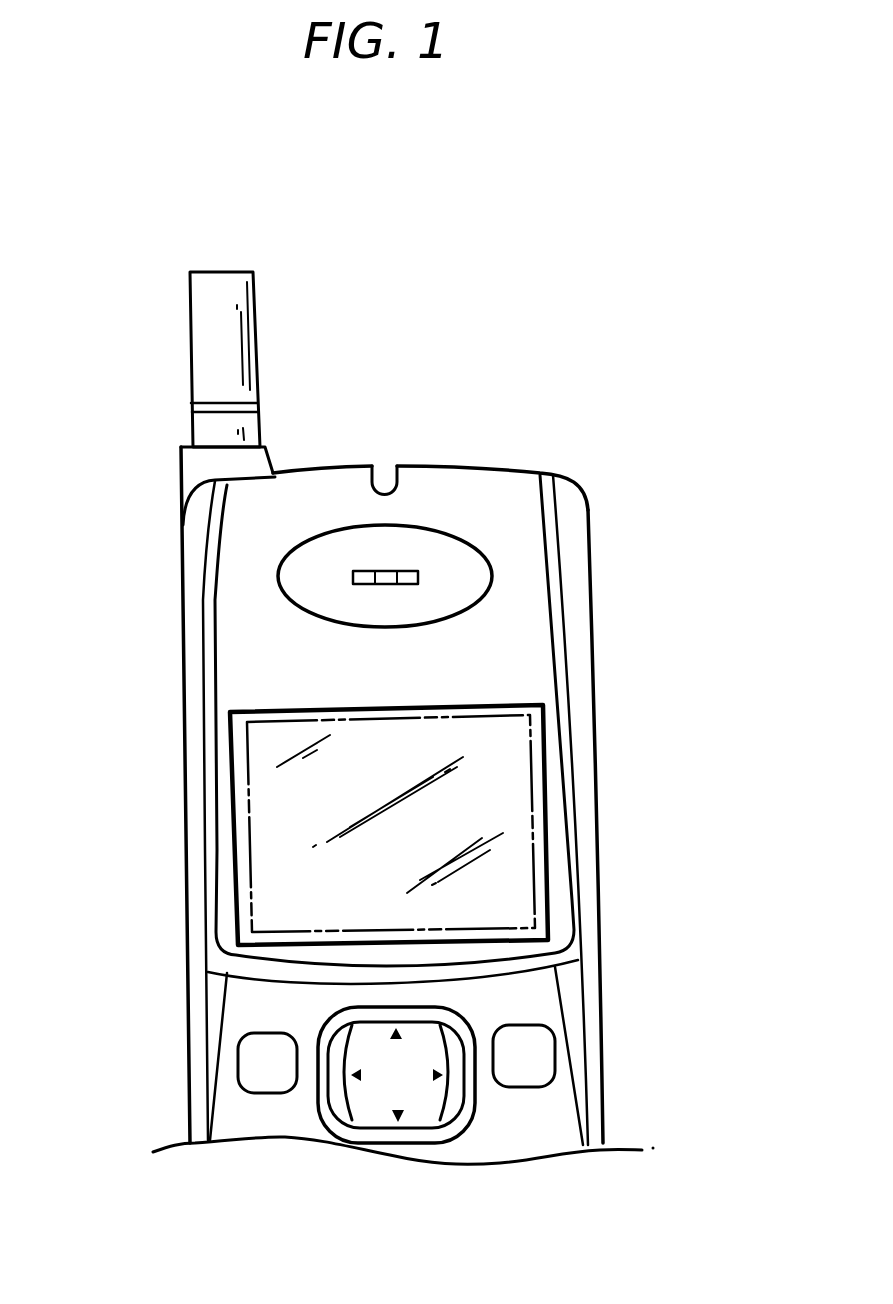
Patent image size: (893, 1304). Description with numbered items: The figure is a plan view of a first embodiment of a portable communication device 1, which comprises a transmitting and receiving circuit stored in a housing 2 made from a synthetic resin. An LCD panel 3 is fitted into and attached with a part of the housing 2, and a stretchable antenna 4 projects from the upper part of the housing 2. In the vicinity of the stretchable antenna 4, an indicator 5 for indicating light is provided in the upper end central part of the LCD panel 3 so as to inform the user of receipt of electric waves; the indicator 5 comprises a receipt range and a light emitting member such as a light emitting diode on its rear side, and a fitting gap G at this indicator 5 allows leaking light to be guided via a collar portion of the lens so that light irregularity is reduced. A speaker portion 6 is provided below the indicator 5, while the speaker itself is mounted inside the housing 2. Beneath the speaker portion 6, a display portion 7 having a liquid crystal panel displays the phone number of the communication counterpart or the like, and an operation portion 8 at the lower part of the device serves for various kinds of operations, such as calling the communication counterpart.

The portable communication device 1 is at (375, 652).
The housing 2 is at (575, 550).
The LCD panel 3 is at (510, 668).
The stretchable antenna 4 is at (205, 330).
The indicator 5 is at (384, 468).
The fitting gap G is at (372, 462).
The speaker portion 6 is at (294, 605).
The display portion 7 is at (298, 806).
The operation portion 8 is at (242, 1100).